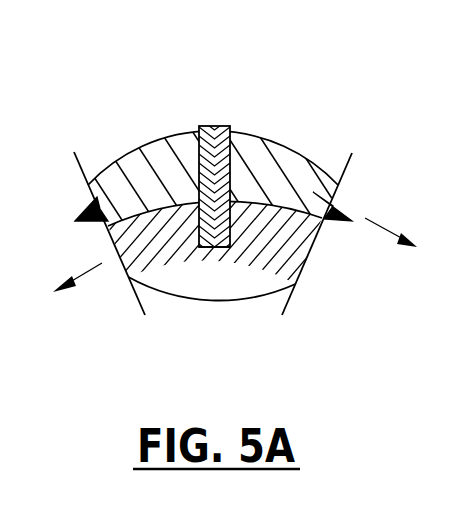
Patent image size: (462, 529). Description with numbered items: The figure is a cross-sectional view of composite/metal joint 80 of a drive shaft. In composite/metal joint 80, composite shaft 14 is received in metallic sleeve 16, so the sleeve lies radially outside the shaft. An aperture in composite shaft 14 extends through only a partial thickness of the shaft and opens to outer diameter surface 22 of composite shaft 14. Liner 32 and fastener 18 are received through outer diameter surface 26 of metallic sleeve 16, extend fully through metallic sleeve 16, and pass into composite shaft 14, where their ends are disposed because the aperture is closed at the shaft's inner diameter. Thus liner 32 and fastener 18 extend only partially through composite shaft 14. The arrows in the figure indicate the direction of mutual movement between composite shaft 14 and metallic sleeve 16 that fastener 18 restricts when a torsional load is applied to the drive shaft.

The composite/metal joint 80 is at (128, 88).
The metallic sleeve 16 is at (272, 162).
The composite shaft 14 is at (238, 252).
The outer diameter surface 26 is at (121, 140).
The outer diameter surface 22 is at (117, 205).
The liner 32 is at (197, 150).
The fastener 18 is at (213, 250).